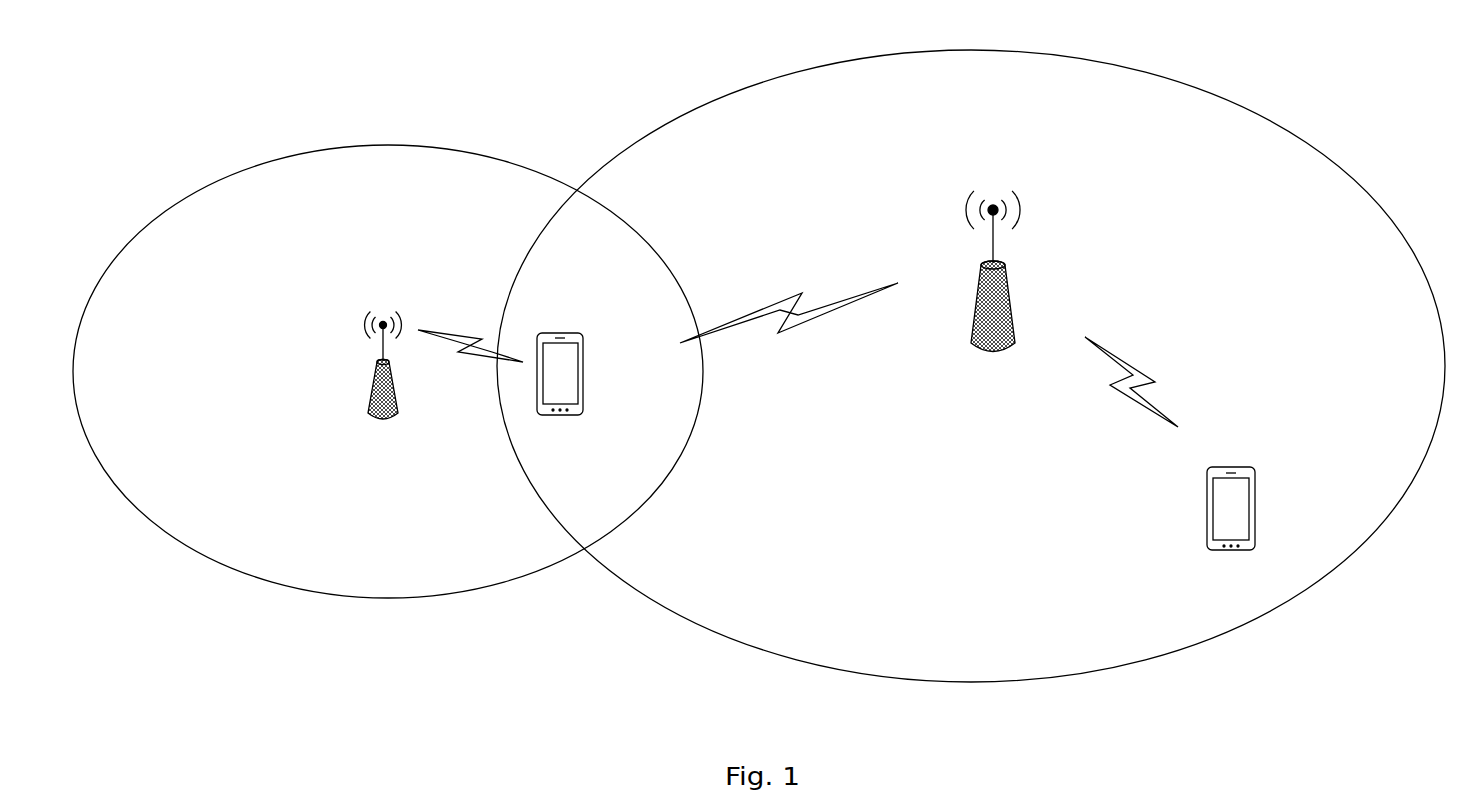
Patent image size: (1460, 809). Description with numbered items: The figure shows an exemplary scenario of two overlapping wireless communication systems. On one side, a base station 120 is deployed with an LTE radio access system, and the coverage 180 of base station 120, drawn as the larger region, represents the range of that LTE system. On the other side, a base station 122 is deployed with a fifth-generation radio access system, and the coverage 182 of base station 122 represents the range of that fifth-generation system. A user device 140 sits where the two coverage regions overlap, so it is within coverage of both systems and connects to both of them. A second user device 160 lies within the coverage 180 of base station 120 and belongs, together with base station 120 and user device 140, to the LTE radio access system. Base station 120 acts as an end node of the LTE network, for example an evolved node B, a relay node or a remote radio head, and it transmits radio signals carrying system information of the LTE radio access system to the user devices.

The base station 120 is at (1063, 228).
The base station 122 is at (329, 323).
The user device 140 is at (603, 414).
The user device 160 is at (1312, 491).
The coverage of base station 120 180 is at (971, 351).
The coverage of base station 122 182 is at (388, 321).